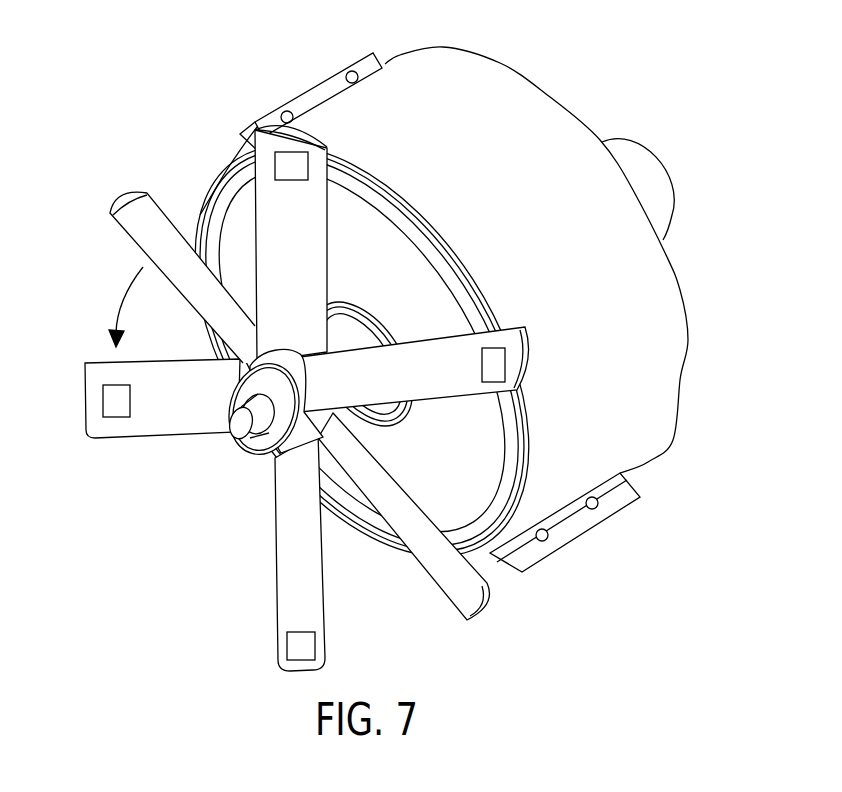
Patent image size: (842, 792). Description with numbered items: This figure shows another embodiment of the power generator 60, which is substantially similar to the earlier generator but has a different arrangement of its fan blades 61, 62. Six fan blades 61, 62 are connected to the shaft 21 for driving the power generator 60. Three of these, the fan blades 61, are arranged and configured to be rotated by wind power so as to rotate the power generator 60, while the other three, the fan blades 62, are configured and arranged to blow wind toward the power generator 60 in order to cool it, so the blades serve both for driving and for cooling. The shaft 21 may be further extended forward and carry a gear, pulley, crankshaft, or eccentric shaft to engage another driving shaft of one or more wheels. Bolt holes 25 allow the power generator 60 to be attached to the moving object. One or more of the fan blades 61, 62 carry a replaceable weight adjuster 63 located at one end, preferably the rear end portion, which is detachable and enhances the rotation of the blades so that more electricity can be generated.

The power generator 60 is at (665, 340).
The bolt holes 25 is at (595, 510).
The shaft 21 is at (240, 388).
The fan blades 61 is at (312, 260).
The fan blades 62 is at (143, 232).
The replaceable weight adjuster 63 is at (110, 396).